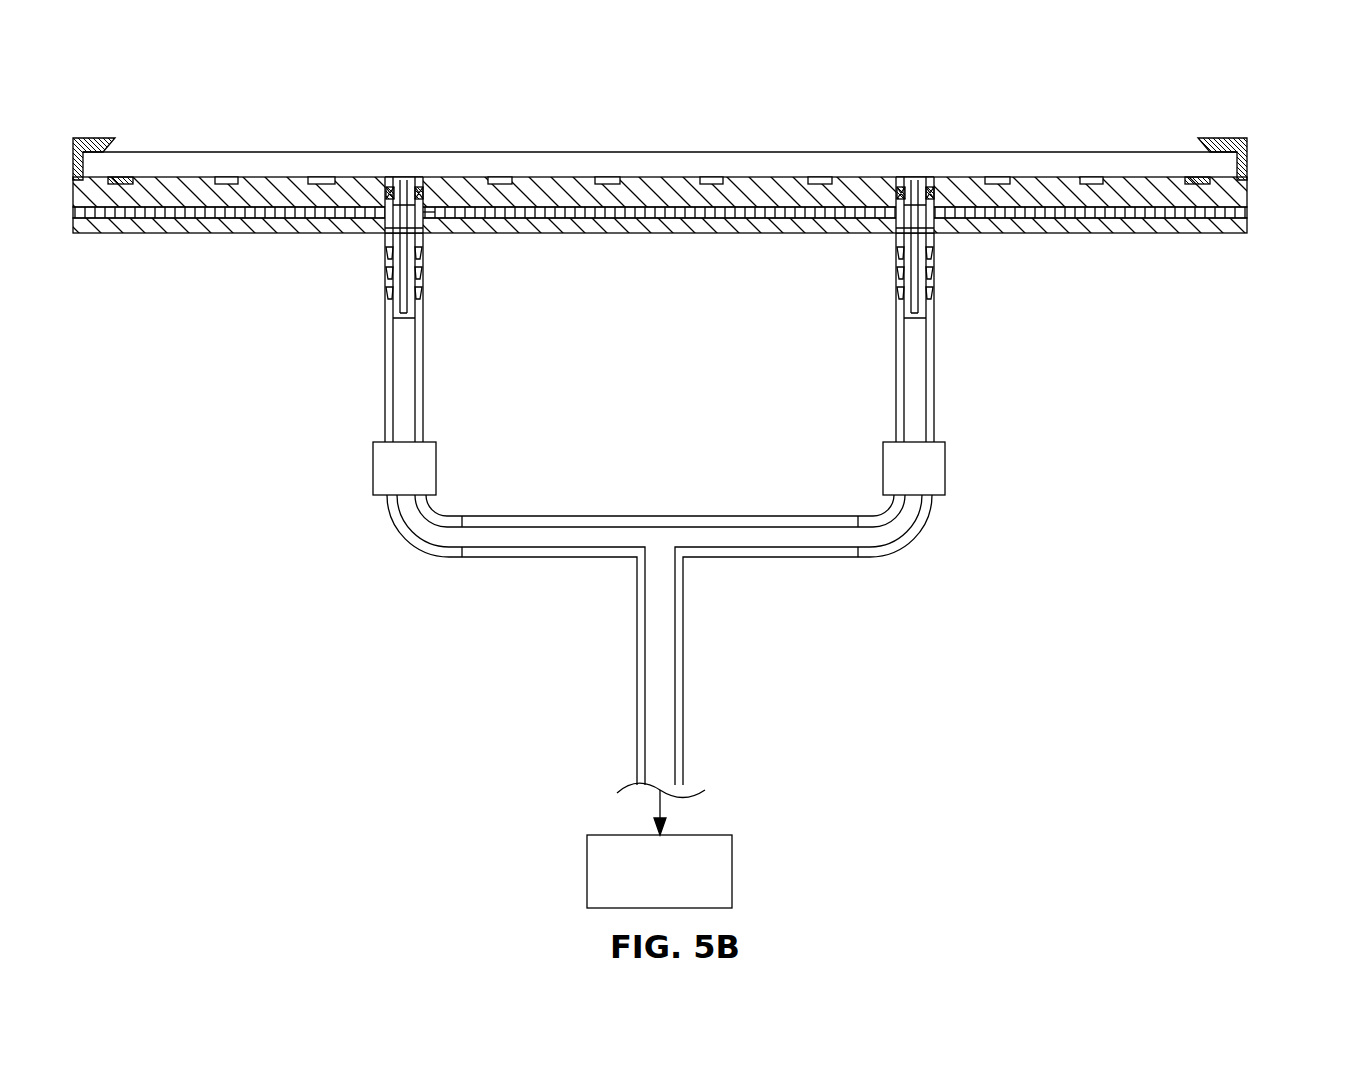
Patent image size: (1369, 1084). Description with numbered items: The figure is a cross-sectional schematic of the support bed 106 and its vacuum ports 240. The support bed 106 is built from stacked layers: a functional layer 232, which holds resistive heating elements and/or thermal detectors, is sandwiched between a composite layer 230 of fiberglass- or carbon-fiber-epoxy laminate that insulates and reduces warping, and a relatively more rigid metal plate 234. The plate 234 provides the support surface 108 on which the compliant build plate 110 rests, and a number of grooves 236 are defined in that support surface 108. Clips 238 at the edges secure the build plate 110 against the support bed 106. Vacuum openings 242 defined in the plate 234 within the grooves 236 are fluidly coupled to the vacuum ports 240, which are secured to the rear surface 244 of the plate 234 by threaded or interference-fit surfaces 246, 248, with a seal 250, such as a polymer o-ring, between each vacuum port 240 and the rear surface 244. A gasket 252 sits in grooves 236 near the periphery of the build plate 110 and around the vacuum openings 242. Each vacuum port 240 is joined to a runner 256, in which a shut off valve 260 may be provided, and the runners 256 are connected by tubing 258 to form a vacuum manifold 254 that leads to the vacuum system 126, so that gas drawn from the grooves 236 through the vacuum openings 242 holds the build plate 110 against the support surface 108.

The support bed 106 is at (1121, 77).
The support surface 108 is at (872, 178).
The build plate 110 is at (600, 152).
The vacuum system 126 is at (638, 887).
The composite layer 230 is at (1200, 235).
The functional layer 232 is at (1248, 215).
The plate 234 is at (1250, 190).
The grooves 236 is at (320, 178).
The clips 238 is at (1227, 137).
The vacuum ports 240 is at (934, 200).
The vacuum openings 242 is at (403, 178).
The rear surface 244 is at (795, 210).
The threaded surface 246 is at (424, 212).
The threaded surface 248 is at (424, 205).
The seal 250 is at (423, 193).
The gasket 252 is at (120, 178).
The vacuum manifold 254 is at (765, 557).
The runners 256 is at (935, 380).
The tubing 258 is at (556, 557).
The shut off valves 260 is at (945, 468).